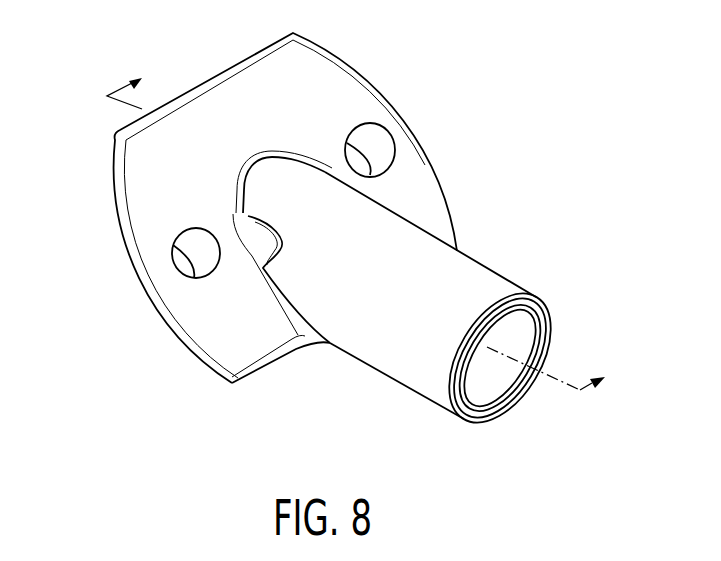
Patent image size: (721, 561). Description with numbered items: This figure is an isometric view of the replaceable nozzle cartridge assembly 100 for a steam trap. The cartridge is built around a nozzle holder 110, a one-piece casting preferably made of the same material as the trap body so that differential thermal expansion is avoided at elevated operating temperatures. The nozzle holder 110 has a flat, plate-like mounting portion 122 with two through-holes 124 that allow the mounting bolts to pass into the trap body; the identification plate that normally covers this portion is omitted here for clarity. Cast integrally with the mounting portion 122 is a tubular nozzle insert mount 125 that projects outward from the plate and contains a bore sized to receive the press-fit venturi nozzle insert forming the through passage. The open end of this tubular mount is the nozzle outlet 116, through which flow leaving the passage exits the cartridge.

The nozzle cartridge assembly 100 is at (325, 70).
The nozzle holder 110 is at (420, 180).
The mounting portion 122 is at (202, 320).
The through-holes 124 is at (375, 142).
The tubular nozzle insert mount 125 is at (473, 273).
The nozzle outlet 116 is at (520, 330).